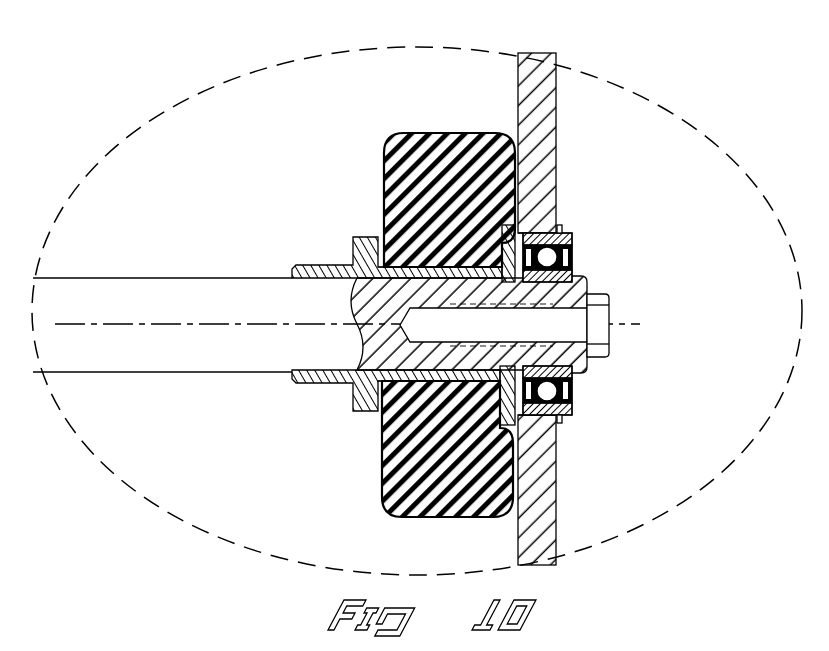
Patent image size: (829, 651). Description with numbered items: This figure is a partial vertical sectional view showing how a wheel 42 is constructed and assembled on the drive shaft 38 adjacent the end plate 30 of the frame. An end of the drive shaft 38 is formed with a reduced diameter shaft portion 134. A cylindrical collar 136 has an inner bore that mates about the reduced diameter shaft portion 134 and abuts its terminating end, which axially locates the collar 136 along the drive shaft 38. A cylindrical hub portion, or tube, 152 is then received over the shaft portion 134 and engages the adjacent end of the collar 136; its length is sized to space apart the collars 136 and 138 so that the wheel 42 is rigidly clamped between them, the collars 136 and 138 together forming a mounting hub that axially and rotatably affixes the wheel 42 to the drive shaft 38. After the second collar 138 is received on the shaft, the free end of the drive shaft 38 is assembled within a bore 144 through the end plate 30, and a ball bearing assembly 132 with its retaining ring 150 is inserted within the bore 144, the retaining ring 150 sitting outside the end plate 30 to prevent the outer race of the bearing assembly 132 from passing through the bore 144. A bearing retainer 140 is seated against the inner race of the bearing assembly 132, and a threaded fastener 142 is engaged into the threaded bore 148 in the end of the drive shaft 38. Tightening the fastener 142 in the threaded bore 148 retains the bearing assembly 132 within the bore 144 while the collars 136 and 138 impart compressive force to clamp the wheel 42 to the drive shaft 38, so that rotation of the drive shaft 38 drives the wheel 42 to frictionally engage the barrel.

The end plate 30 is at (535, 118).
The drive shaft 38 is at (152, 276).
The wheel 42 is at (452, 131).
The ball bearing assembly 132 is at (573, 236).
The reduced diameter shaft portion 134 is at (330, 263).
The collar 136 is at (323, 386).
The collar 138 is at (533, 212).
The bearing retainer 140 is at (590, 282).
The threaded fastener 142 is at (610, 318).
The bore 144 is at (572, 398).
The threaded bore 148 is at (492, 318).
The retaining ring 150 is at (562, 424).
The cylindrical hub portion 152 is at (428, 262).